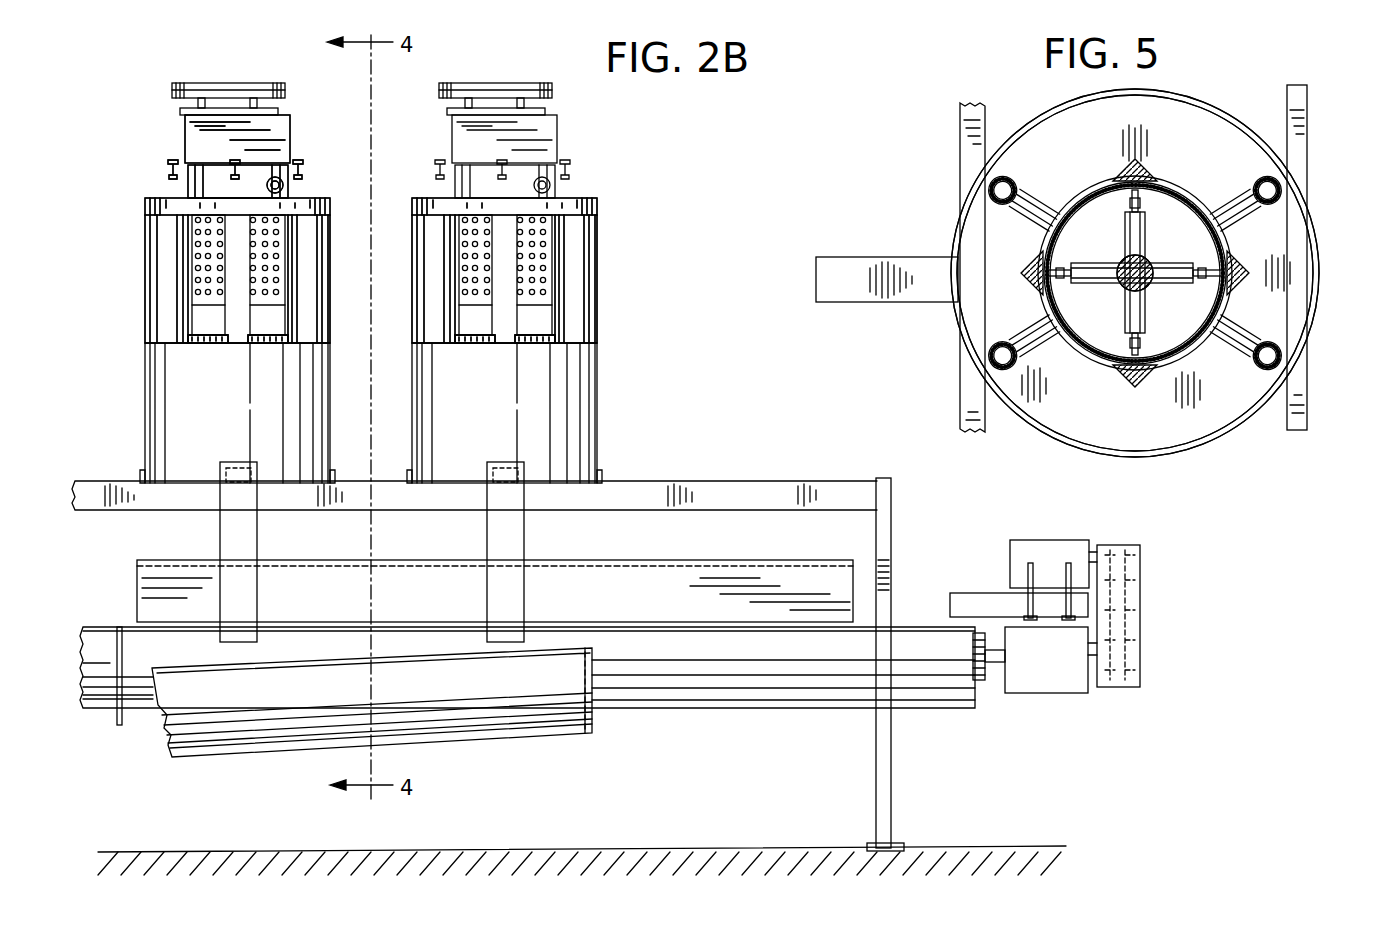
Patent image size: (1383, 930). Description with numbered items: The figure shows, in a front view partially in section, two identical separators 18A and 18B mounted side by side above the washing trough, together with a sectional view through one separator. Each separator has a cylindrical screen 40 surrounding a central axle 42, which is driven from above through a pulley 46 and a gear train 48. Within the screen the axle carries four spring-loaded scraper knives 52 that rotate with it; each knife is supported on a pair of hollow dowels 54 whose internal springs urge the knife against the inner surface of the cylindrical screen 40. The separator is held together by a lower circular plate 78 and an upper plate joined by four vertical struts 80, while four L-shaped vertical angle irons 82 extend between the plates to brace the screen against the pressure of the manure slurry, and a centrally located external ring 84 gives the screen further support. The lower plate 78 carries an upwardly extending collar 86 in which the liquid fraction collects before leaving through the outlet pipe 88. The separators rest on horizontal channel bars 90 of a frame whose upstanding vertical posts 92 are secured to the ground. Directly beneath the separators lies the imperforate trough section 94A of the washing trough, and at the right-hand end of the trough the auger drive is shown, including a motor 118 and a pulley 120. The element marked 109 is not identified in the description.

In FIG. 2B, the separator 18A is at (625, 312).
In FIG. 2B, the separator 18B is at (138, 293).
In FIG. 5, the separator 18B is at (1242, 440).
In FIG. 2B, the cylindrical screen 40 is at (200, 240).
In FIG. 5, the cylindrical screen 40 is at (1083, 362).
In FIG. 5, the central axle 42 is at (1142, 268).
In FIG. 2B, the pulley 46 is at (240, 82).
In FIG. 2B, the gear train 48 is at (185, 135).
In FIG. 5, the scraper knives 52 is at (1135, 205).
In FIG. 5, the hollow dowels 54 is at (1127, 280).
In FIG. 5, the lower circular plate 78 is at (985, 312).
In FIG. 2B, the vertical struts 80 is at (327, 252).
In FIG. 5, the vertical struts 80 is at (1016, 178).
In FIG. 2B, the vertical angle irons 82 is at (292, 322).
In FIG. 5, the vertical angle irons 82 is at (1127, 170).
In FIG. 2B, the external ring 84 is at (286, 184).
In FIG. 5, the external ring 84 is at (1200, 190).
In FIG. 2B, the collar 86 is at (155, 405).
In FIG. 5, the collar 86 is at (1137, 457).
In FIG. 2B, the outlet pipe 88 is at (243, 540).
In FIG. 5, the outlet pipe 88 is at (865, 262).
In FIG. 2B, the horizontal channel bars 90 is at (720, 481).
In FIG. 5, the horizontal channel bars 90 is at (965, 130).
In FIG. 2B, the vertical posts 92 is at (891, 530).
In FIG. 2B, the trough section 94A is at (742, 677).
In FIG. 2B, the coupling 109 is at (992, 660).
In FIG. 2B, the motor 118 is at (1045, 552).
In FIG. 2B, the pulley 120 is at (1120, 603).